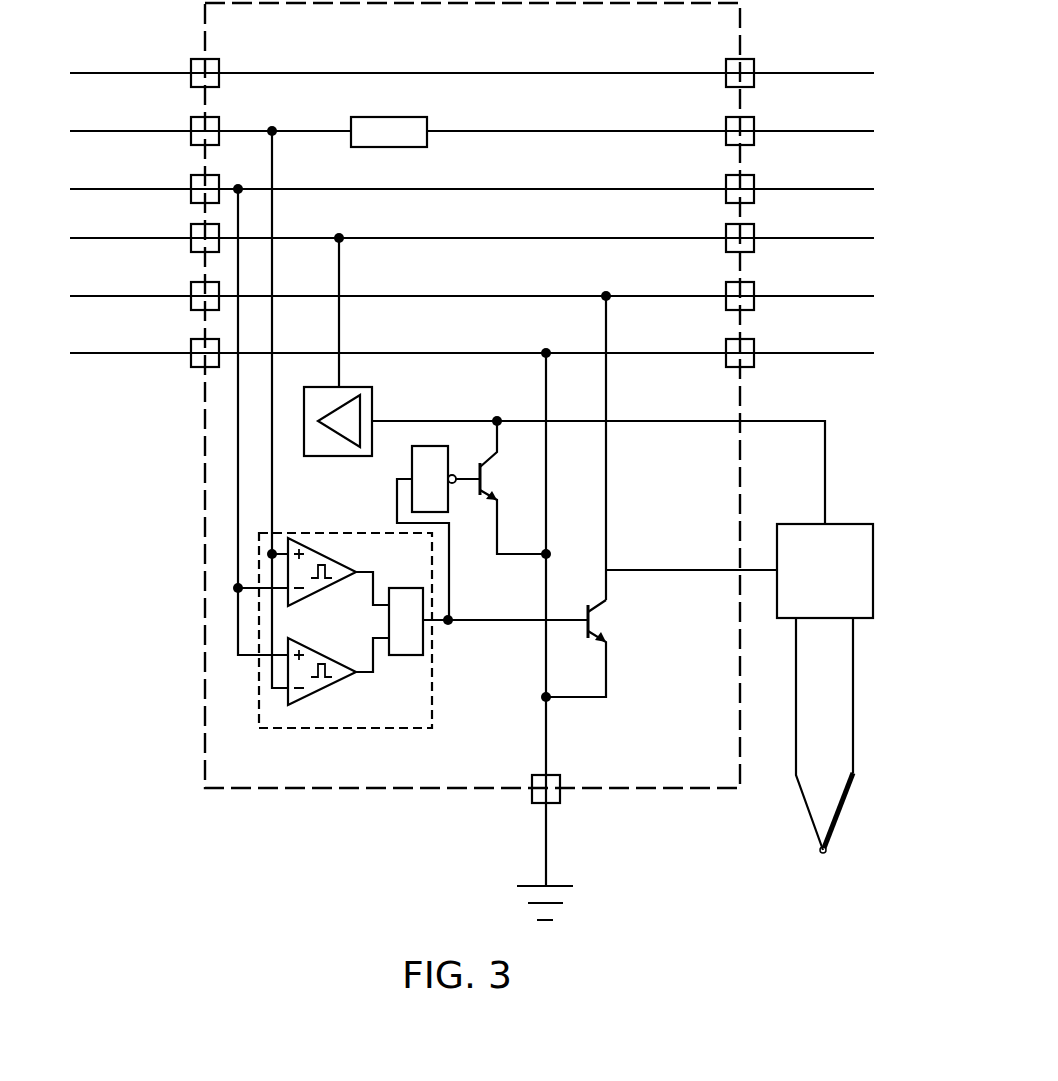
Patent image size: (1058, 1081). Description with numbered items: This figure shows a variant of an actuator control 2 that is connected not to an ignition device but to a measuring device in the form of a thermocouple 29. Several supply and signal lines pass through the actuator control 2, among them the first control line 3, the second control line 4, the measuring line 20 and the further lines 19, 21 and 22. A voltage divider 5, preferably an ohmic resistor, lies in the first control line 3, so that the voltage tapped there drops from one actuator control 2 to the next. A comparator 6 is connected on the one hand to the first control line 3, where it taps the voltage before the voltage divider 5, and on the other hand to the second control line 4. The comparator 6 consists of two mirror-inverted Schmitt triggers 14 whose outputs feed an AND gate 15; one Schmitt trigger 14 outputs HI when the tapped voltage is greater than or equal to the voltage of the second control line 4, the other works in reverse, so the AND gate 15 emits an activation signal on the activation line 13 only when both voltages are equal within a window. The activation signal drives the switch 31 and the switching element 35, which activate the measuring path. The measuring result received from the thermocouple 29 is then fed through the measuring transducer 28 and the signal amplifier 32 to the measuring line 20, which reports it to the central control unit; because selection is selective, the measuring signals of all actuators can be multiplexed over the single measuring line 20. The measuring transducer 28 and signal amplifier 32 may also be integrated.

The actuator control 2 is at (205, 478).
The first control line 3 is at (813, 131).
The second control line 4 is at (813, 189).
The voltage divider 5 is at (389, 130).
The comparator 6 is at (258, 625).
The activation line 13 is at (497, 622).
The Schmitt trigger 14 is at (300, 570).
The AND gate 15 is at (407, 642).
The connection line 19 is at (813, 73).
The measuring line 20 is at (813, 238).
The connection line 21 is at (813, 296).
The connection line 22 is at (813, 353).
The measuring transducer 28 is at (841, 555).
The thermocouple 29 is at (868, 812).
The switch 31 is at (429, 458).
The signal amplifier 32 is at (328, 398).
The switching element 35 is at (479, 438).